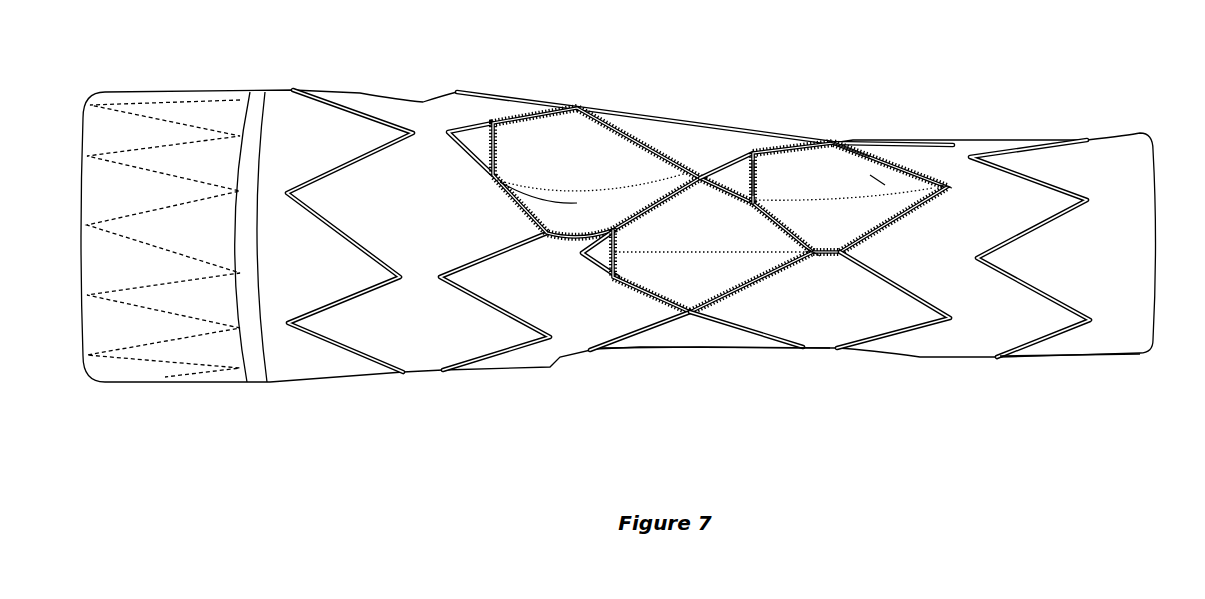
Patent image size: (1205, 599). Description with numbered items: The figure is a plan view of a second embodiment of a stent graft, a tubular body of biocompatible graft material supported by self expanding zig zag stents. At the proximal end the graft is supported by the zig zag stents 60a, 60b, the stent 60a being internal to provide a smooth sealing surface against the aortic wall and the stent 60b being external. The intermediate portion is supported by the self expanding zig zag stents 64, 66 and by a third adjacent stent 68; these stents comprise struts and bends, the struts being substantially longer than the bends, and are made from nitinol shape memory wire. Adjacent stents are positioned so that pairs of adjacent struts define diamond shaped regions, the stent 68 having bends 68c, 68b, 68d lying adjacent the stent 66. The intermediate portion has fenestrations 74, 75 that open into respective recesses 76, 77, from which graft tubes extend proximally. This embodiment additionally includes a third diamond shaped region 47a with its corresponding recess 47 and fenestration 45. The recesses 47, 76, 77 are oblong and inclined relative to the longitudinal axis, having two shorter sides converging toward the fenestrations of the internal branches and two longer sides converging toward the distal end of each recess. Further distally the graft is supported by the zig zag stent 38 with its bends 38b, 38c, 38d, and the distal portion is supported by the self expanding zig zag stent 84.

The self expanding zig zag stent 60a is at (165, 377).
The self expanding zig zag stent 60b is at (345, 385).
The self expanding zig zag stent 64 is at (503, 363).
The self expanding zig zag stent 66 is at (641, 351).
The third adjacent stent 68 is at (748, 351).
The stent apex 68b is at (813, 256).
The bend 68c is at (697, 173).
The stent apex 68d is at (828, 140).
The fenestration 74 is at (514, 154).
The fenestration 75 is at (647, 263).
The recess 76 is at (565, 177).
The recess 77 is at (690, 246).
The recess 47 is at (814, 195).
The third diamond shaped region 47a is at (877, 180).
The fenestration 45 is at (766, 180).
The stent 38 is at (891, 364).
The stent apex 38b is at (838, 256).
The stent apex 38c is at (952, 187).
The stent apex 38d is at (843, 140).
The self expanding zig zag stent 84 is at (1016, 364).